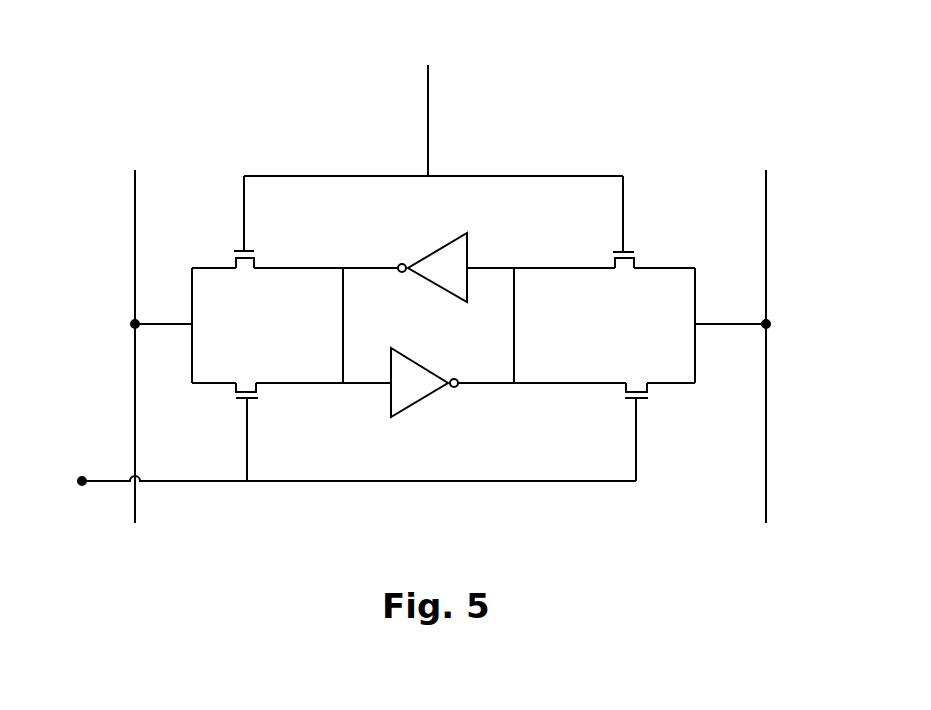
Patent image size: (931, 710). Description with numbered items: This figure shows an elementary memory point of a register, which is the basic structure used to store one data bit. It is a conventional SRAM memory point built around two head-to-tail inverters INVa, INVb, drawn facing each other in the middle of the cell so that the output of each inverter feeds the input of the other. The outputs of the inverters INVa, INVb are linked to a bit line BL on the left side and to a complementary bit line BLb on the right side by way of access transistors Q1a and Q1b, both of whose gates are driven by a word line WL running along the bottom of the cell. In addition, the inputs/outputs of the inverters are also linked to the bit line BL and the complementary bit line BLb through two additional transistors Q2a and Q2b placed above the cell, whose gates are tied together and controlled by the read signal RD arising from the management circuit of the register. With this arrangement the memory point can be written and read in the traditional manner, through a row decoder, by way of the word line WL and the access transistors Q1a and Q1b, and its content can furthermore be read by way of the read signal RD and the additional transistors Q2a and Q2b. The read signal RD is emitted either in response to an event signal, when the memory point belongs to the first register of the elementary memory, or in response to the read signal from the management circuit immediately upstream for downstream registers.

The read signal RD is at (433, 110).
The bit line BL is at (146, 346).
The complementary bit line BLb is at (749, 346).
The word line WL is at (341, 468).
The access transistor Q1a is at (266, 432).
The access transistor Q1b is at (617, 432).
The additional transistor Q2a is at (264, 222).
The additional transistor Q2b is at (602, 222).
The inverter INVa is at (432, 263).
The inverter INVb is at (424, 386).